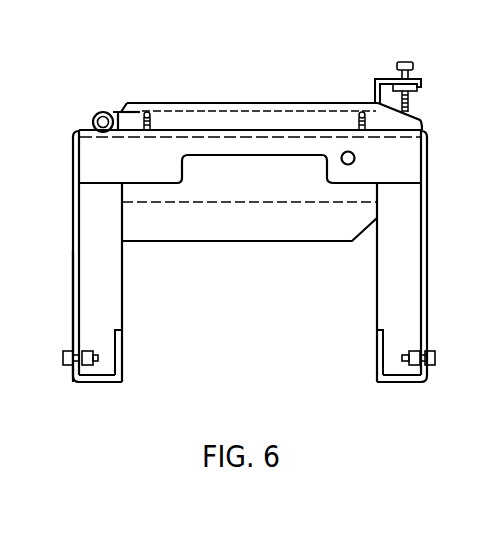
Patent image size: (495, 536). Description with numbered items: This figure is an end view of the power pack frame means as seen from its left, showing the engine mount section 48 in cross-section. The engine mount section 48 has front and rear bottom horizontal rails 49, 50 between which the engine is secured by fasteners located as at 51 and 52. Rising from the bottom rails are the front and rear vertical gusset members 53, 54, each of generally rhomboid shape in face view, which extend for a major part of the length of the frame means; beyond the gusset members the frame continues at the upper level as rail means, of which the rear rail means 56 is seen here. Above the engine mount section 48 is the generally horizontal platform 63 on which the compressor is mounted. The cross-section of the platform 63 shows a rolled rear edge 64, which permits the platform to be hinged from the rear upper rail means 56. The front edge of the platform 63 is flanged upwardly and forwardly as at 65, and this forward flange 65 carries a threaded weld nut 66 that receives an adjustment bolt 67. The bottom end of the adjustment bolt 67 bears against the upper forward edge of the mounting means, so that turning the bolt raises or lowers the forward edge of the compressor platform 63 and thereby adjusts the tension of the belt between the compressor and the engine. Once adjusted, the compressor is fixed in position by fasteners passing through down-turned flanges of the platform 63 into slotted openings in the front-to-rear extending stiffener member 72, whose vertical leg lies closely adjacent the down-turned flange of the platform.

The engine mount section 48 is at (245, 335).
The front bottom horizontal rail 49 is at (387, 341).
The rear bottom horizontal rail 50 is at (112, 342).
The fastener location 51 is at (375, 357).
The fastener location 52 is at (120, 355).
The front vertical gusset member 53 is at (428, 280).
The rear vertical gusset member 54 is at (73, 308).
The rear rail means 56 is at (73, 168).
The compressor platform 63 is at (172, 107).
The rolled rear edge 64 is at (106, 111).
The front flange 65 is at (378, 83).
The threaded weld nut 66 is at (417, 91).
The adjustment bolt 67 is at (413, 65).
The stiffener member 72 is at (258, 190).